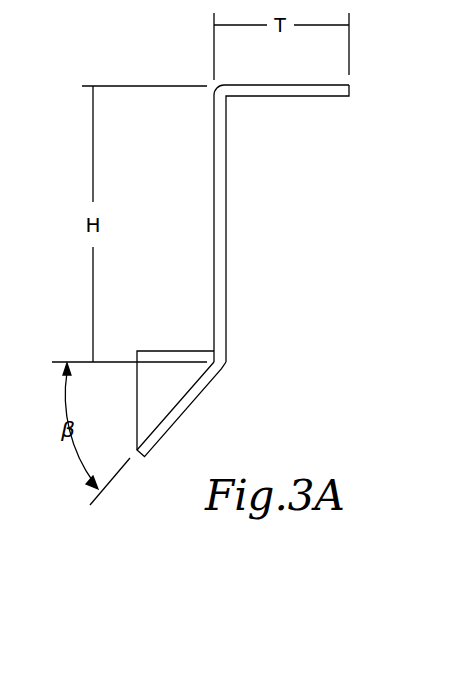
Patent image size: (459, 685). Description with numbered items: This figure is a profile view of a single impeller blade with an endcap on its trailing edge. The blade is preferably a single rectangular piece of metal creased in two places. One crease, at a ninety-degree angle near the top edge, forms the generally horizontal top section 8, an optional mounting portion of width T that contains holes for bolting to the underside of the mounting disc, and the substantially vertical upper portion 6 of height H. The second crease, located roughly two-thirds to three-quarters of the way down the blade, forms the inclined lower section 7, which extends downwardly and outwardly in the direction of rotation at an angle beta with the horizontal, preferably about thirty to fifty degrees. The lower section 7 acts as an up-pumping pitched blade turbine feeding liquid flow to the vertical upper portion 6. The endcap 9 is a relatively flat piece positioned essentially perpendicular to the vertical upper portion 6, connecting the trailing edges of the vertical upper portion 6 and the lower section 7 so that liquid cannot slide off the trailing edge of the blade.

The vertical upper portion 6 is at (226, 201).
The lower section 7 is at (172, 428).
The top section 8 is at (272, 83).
The endcap 9 is at (167, 383).